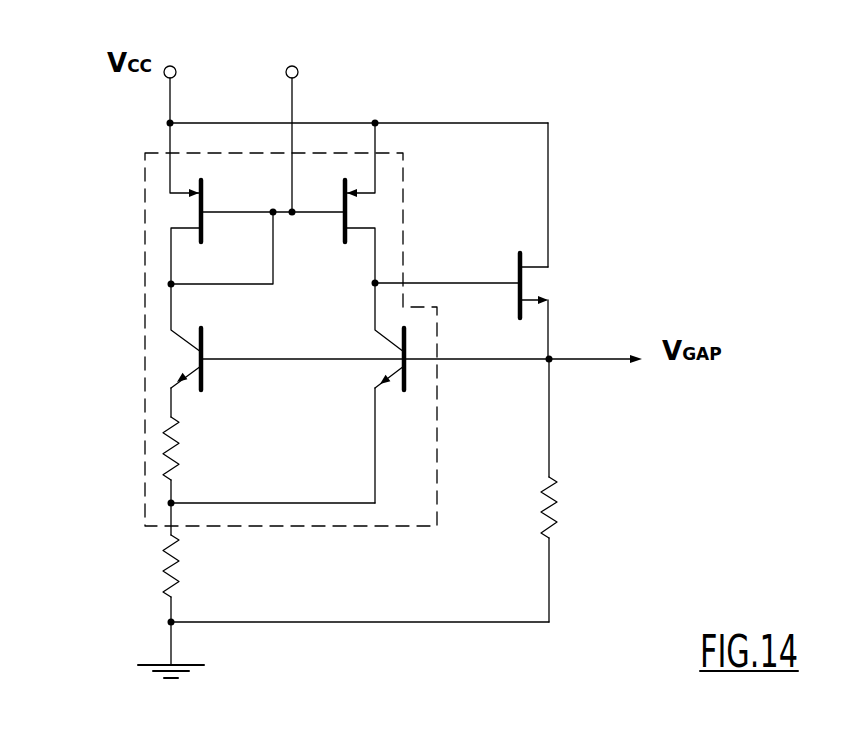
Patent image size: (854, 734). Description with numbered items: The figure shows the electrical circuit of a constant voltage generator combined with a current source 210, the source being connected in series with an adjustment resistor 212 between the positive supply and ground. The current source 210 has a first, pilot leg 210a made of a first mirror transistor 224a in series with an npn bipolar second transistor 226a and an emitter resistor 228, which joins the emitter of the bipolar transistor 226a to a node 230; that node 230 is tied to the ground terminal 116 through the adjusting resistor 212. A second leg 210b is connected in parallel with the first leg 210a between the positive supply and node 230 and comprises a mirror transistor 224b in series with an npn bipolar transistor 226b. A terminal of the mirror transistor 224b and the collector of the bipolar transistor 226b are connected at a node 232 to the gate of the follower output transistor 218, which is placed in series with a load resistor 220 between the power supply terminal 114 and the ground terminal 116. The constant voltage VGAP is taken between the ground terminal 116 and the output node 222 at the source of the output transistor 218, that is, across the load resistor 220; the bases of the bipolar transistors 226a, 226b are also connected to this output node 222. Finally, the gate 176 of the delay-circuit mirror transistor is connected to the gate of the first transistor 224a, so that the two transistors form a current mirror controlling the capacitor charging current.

The positive power supply terminal 114 is at (176, 72).
The gate of the mirror transistor in the delay circuit 176 is at (293, 66).
The current source 210 is at (322, 150).
The first leg 210a is at (156, 168).
The second leg 210b is at (380, 183).
The first transistor 224a is at (200, 221).
The mirror transistor 224b is at (354, 189).
The second transistor 226a is at (200, 358).
The bipolar transistor of the second leg 226b is at (410, 364).
The emitter resistor 228 is at (165, 423).
The node 230 is at (170, 503).
The node 232 is at (378, 281).
The output transistor 218 is at (523, 277).
The output node 222 is at (552, 363).
The load resistor 220 is at (556, 530).
The adjustment resistor 212 is at (162, 568).
The ground terminal 116 is at (157, 664).